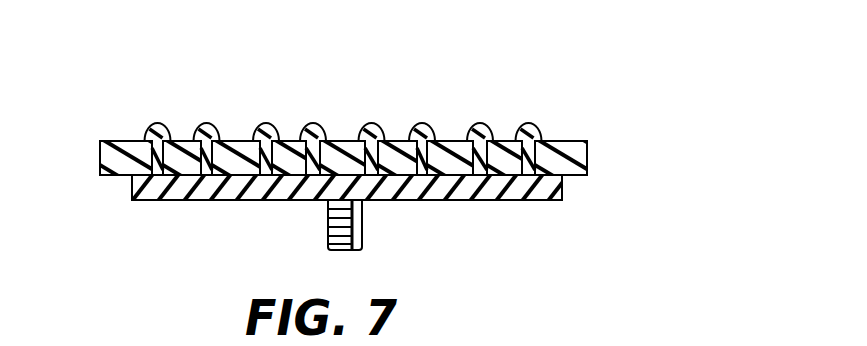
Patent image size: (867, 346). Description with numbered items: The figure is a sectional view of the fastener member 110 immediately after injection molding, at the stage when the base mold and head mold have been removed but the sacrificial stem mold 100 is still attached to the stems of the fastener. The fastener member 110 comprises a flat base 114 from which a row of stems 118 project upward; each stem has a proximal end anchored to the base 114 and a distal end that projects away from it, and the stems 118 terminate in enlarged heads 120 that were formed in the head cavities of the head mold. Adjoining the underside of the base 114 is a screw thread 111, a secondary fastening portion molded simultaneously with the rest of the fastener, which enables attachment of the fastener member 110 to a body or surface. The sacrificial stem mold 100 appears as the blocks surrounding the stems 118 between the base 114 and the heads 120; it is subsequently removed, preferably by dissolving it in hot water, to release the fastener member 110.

The sacrificial stem mold 100 is at (398, 163).
The fastener member 110 is at (413, 206).
The screw thread 111 is at (328, 240).
The base 114 is at (447, 193).
The stems 118 is at (152, 137).
The heads 120 is at (518, 143).